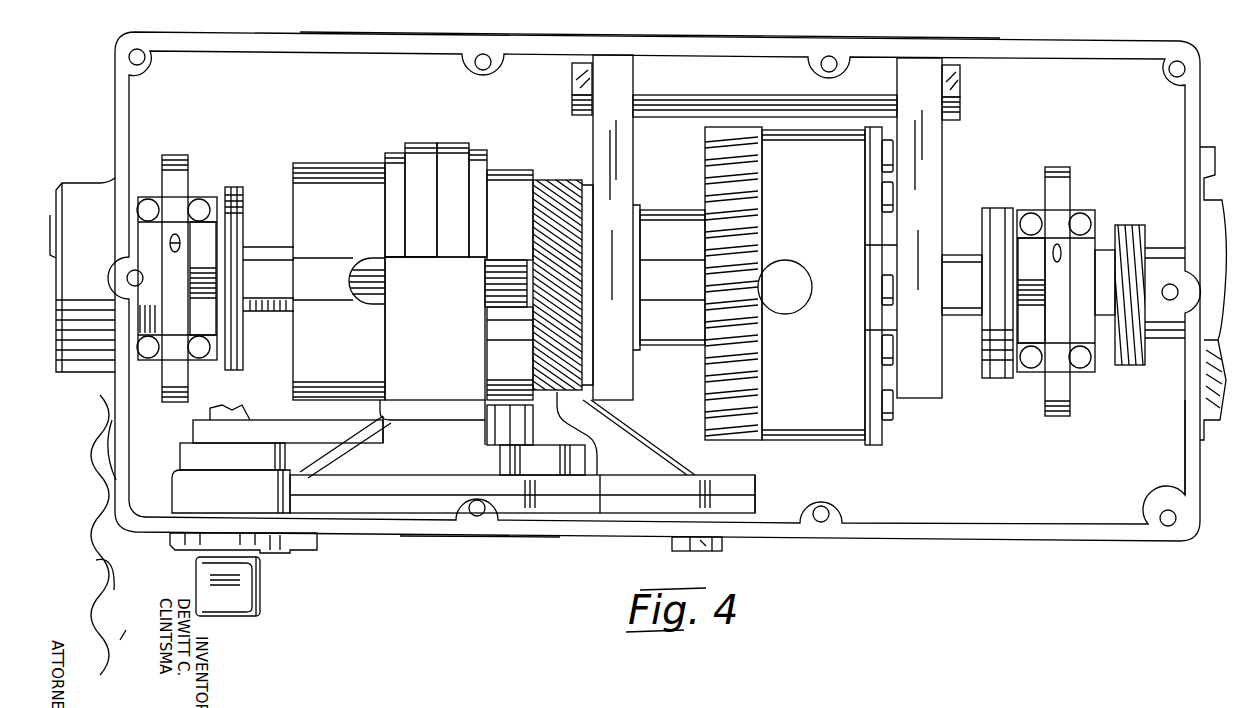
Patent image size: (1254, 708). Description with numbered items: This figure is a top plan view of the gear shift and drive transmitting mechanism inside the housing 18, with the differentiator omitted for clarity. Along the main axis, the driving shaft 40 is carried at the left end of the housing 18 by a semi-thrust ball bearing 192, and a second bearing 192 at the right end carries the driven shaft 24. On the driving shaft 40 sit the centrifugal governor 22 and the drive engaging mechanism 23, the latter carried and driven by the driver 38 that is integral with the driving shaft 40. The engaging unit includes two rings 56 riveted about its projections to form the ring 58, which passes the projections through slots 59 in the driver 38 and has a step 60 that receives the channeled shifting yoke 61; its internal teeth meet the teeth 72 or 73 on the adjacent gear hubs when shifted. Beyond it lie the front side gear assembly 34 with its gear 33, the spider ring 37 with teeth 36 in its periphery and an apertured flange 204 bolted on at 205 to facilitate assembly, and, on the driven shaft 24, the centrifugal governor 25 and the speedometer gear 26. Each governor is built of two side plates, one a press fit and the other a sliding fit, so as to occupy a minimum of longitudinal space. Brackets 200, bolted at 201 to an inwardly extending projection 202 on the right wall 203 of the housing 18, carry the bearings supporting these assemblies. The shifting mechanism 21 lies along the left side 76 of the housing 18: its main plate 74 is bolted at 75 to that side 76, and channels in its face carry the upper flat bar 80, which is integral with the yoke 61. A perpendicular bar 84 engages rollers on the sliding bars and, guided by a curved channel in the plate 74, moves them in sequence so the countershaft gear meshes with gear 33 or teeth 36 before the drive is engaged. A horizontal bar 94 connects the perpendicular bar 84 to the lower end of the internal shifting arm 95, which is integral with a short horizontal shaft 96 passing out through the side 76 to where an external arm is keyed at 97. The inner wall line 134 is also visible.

The housing 18 is at (1068, 548).
The direction shifting mechanism 21 is at (177, 454).
The driving shaft centrifugal governor 22 is at (175, 155).
The drive engaging mechanism 23 is at (303, 163).
The driven shaft 24 is at (952, 262).
The centrifugal governor 25 is at (1065, 170).
The speedometer gear 26 is at (1135, 365).
The gear 33 is at (556, 180).
The front side gear assembly 34 is at (647, 188).
The teeth 36 is at (720, 440).
The spider ring 37 is at (875, 445).
The driver 38 is at (295, 372).
The driving shaft 40 is at (262, 247).
The rings 56 is at (395, 153).
The ring 58 is at (405, 143).
The slots 59 is at (372, 258).
The step 60 is at (437, 143).
The channeled shifting yoke 61 is at (450, 326).
The teeth 72 is at (490, 280).
The teeth 73 is at (353, 280).
The main plate 74 is at (757, 505).
The bolts 75 is at (672, 545).
The left side 76 is at (482, 540).
The upper flat bar 80 is at (460, 496).
The perpendicular bar 84 is at (556, 470).
The horizontal bar 94 is at (305, 428).
The internal shifting arm 95 is at (228, 472).
The short horizontal shaft 96 is at (265, 556).
The keyed end 97 is at (255, 590).
The inner wall 134 is at (1185, 478).
The semi-thrust ball bearings 192 is at (95, 180).
The brackets 200 is at (593, 132).
The bolts 201 is at (572, 92).
The inwardly extending projection 202 is at (784, 90).
The right wall 203 is at (798, 32).
The apertured flange 204 is at (872, 245).
The bolts 205 is at (885, 195).